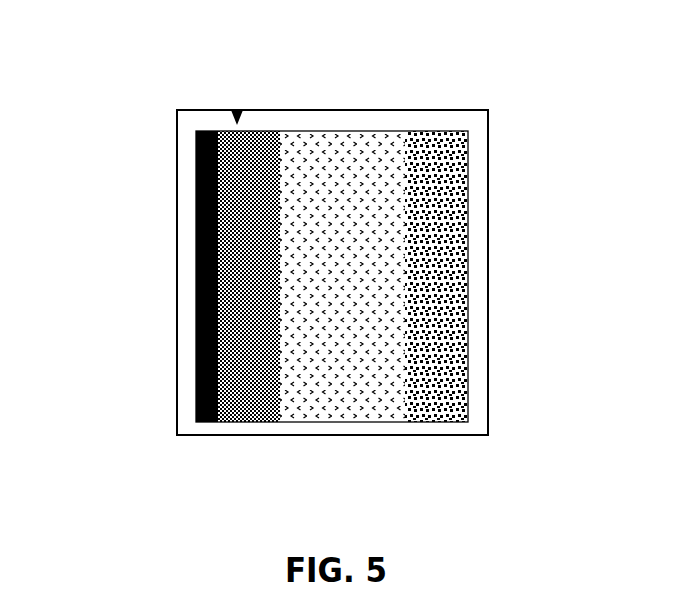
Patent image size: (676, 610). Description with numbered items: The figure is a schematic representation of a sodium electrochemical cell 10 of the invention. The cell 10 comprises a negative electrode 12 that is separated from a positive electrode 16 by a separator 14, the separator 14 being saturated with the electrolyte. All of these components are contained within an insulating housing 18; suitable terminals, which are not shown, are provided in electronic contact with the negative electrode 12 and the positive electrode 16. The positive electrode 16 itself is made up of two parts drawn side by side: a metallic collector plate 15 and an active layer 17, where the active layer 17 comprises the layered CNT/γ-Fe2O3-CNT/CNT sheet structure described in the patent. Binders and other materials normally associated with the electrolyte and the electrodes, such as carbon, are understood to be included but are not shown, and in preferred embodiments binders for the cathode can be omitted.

The sodium electrochemical cell 10 is at (305, 221).
The negative electrode 12 is at (446, 150).
The separator 14 is at (320, 150).
The metallic collector plate 15 is at (196, 131).
The positive electrode 16 is at (237, 112).
The active layer 17 is at (258, 150).
The insulating housing 18 is at (488, 172).